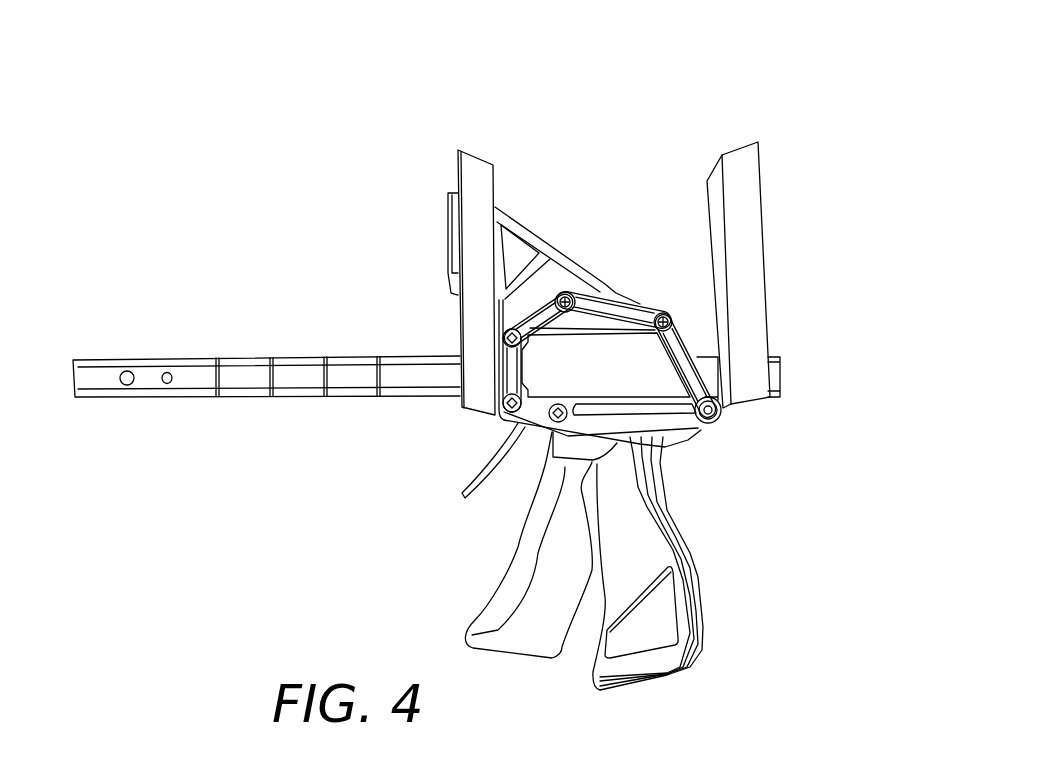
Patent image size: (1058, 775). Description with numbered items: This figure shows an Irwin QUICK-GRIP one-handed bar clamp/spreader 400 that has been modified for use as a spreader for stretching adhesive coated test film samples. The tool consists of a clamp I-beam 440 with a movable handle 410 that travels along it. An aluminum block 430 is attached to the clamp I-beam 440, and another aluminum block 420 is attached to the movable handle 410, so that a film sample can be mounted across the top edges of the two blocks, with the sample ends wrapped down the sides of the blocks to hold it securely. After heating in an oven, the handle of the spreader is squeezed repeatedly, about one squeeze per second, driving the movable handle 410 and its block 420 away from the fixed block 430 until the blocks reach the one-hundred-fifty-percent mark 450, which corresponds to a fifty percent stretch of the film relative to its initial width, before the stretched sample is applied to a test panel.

The bar clamp 400 is at (648, 118).
The movable handle 410 is at (677, 513).
The aluminum block 420 is at (475, 176).
The aluminum block 430 is at (742, 175).
The clamp I-beam 440 is at (175, 398).
The 150% mark 450 is at (325, 357).